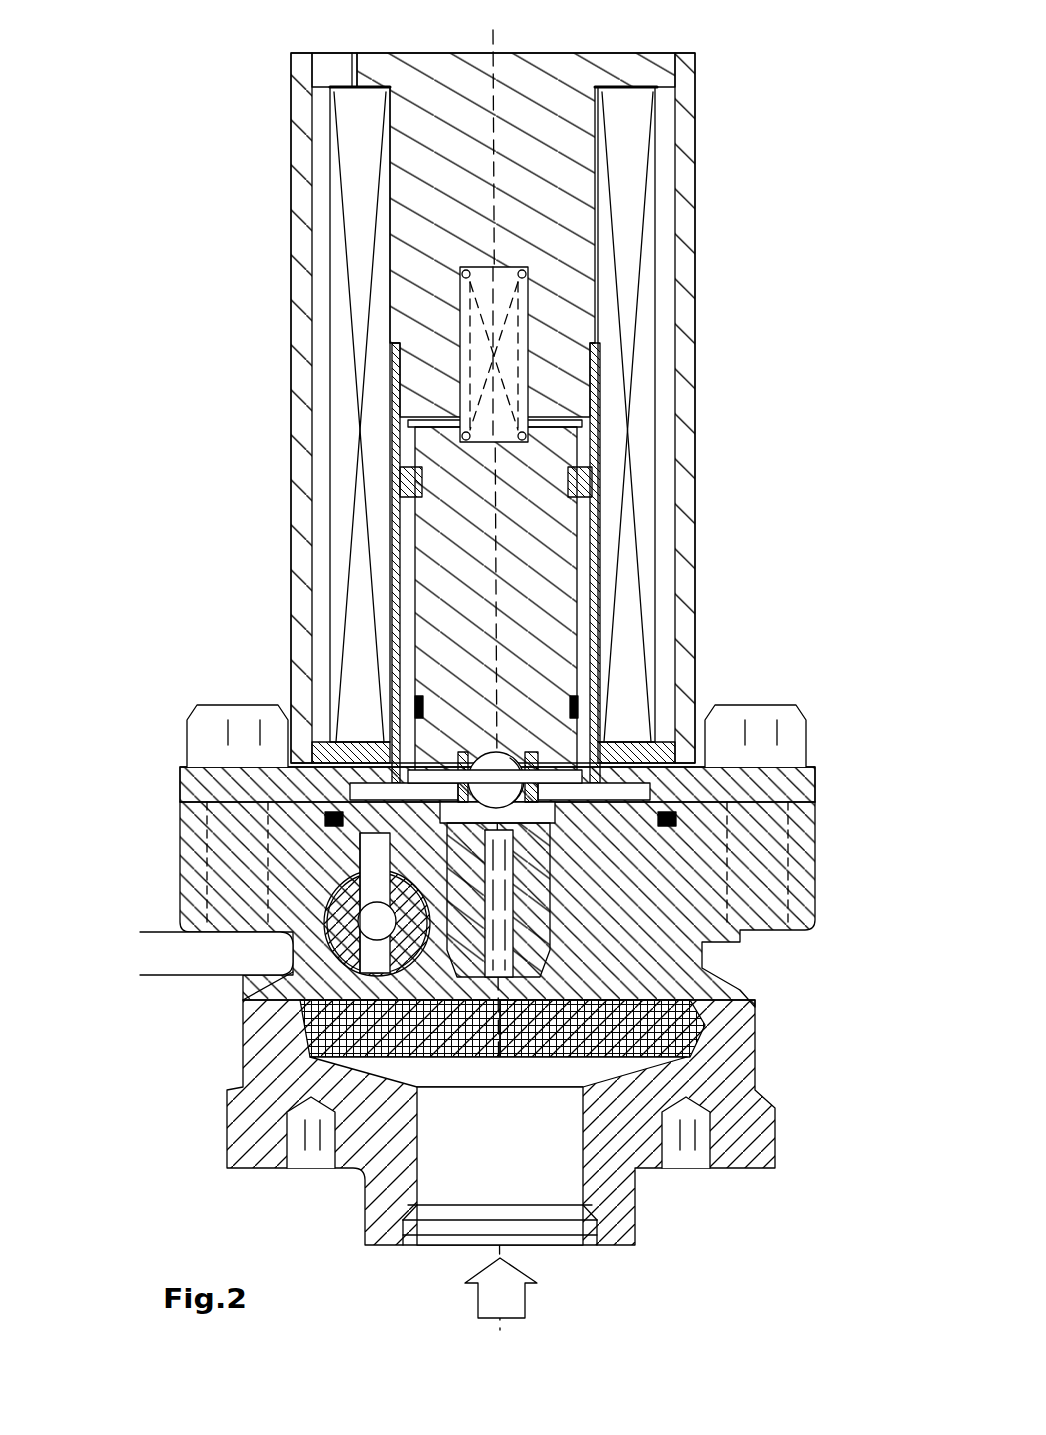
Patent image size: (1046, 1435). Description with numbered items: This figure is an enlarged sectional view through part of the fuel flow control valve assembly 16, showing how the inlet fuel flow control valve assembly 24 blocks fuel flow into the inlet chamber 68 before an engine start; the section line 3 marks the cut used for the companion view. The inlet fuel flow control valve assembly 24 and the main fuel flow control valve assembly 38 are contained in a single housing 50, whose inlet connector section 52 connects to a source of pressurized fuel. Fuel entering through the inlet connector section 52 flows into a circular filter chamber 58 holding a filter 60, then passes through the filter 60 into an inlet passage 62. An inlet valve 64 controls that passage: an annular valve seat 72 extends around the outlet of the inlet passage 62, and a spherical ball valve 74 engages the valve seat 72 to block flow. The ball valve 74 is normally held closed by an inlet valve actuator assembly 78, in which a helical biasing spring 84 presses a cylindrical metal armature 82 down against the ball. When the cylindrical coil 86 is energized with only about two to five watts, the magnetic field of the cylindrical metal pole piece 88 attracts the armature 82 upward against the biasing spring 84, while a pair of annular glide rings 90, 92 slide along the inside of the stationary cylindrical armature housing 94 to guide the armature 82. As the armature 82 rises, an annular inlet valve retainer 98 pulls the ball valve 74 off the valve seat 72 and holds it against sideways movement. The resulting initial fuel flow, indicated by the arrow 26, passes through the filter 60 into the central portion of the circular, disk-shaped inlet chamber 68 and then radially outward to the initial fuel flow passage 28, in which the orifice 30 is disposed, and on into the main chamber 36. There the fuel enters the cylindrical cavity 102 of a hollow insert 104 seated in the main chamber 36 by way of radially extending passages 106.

The section line 3- 3 is at (355, 671).
The fuel flow control valve assembly 16 is at (138, 358).
The inlet fuel flow control valve assembly 24 is at (632, 720).
The arrow 26 is at (515, 1302).
The initial fuel flow passage 28 is at (360, 853).
The orifice 30 is at (345, 833).
The main chamber 36 is at (345, 967).
The main fuel flow control valve assembly 38 is at (330, 953).
The housing 50 is at (820, 858).
The inlet connector section 52 is at (380, 1195).
The filter chamber 58 is at (543, 1075).
The filter 60 is at (458, 1045).
The inlet passage 62 is at (757, 1015).
The inlet valve 64 is at (478, 742).
The inlet chamber 68 is at (607, 790).
The valve seat 72 is at (702, 965).
The ball valve 74 is at (483, 770).
The inlet valve actuator assembly 78 is at (667, 455).
The armature 82 is at (535, 578).
The biasing spring 84 is at (528, 278).
The coil 86 is at (620, 187).
The pole piece 88 is at (447, 118).
The glide ring 90 is at (580, 492).
The glide ring 92 is at (582, 700).
The armature housing 94 is at (592, 607).
The inlet valve retainer 98 is at (412, 737).
The cylindrical cavity 102 is at (370, 920).
The insert 104 is at (285, 947).
The radially extending passages 106 is at (357, 885).